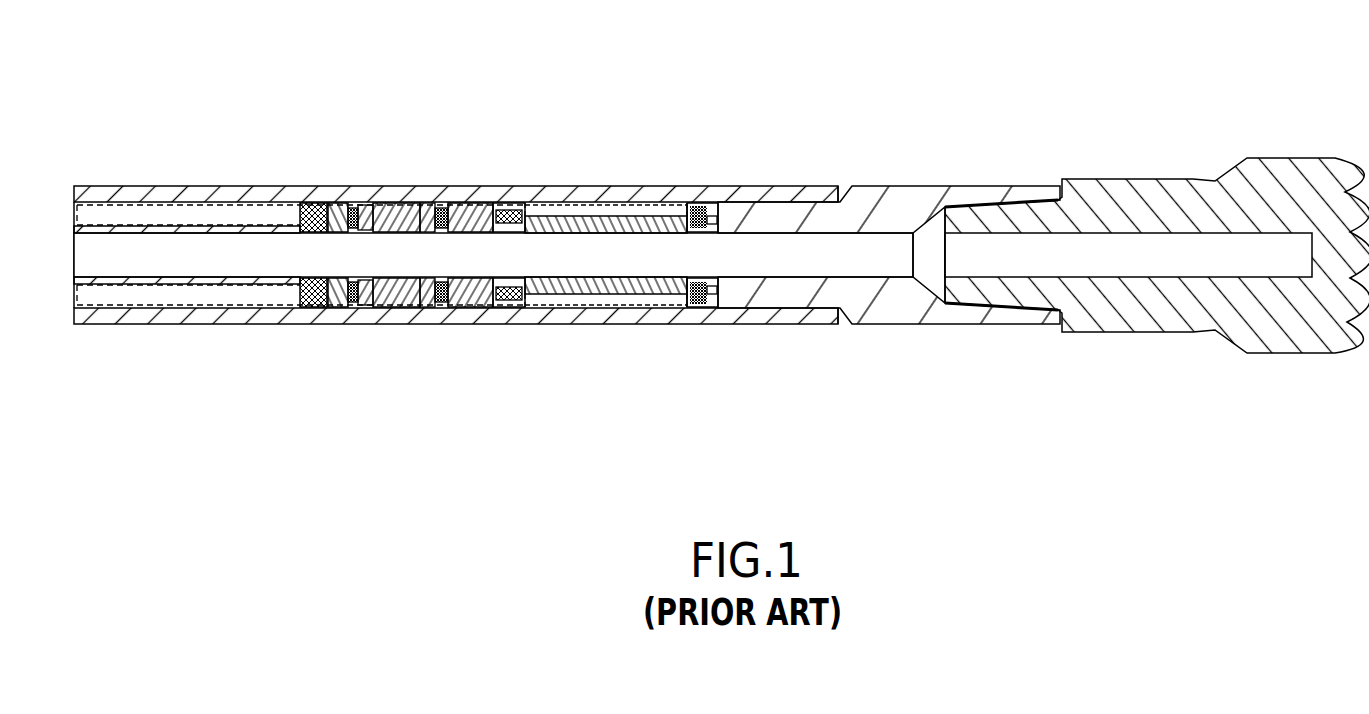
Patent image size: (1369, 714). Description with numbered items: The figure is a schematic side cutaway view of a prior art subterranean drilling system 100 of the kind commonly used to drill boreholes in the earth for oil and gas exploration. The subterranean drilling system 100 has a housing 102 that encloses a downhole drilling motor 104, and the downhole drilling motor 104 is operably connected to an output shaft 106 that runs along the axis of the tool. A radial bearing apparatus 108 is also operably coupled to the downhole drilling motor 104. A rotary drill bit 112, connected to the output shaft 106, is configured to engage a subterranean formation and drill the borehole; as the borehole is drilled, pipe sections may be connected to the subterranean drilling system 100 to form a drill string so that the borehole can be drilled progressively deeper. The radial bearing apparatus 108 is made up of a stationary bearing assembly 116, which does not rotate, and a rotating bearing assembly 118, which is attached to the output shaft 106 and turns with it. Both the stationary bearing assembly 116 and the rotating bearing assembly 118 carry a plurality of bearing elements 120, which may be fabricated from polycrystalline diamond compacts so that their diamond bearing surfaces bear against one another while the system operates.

The subterranean drilling system 100 is at (1042, 104).
The housing 102 is at (485, 186).
The downhole drilling motor 104 is at (182, 198).
The output shaft 106 is at (143, 233).
The radial bearing apparatus 108 is at (748, 207).
The rotary drill bit 112 is at (1275, 186).
The stationary bearing assembly 116 is at (700, 210).
The rotating bearing assembly 118 is at (716, 221).
The bearing elements 120 is at (700, 300).